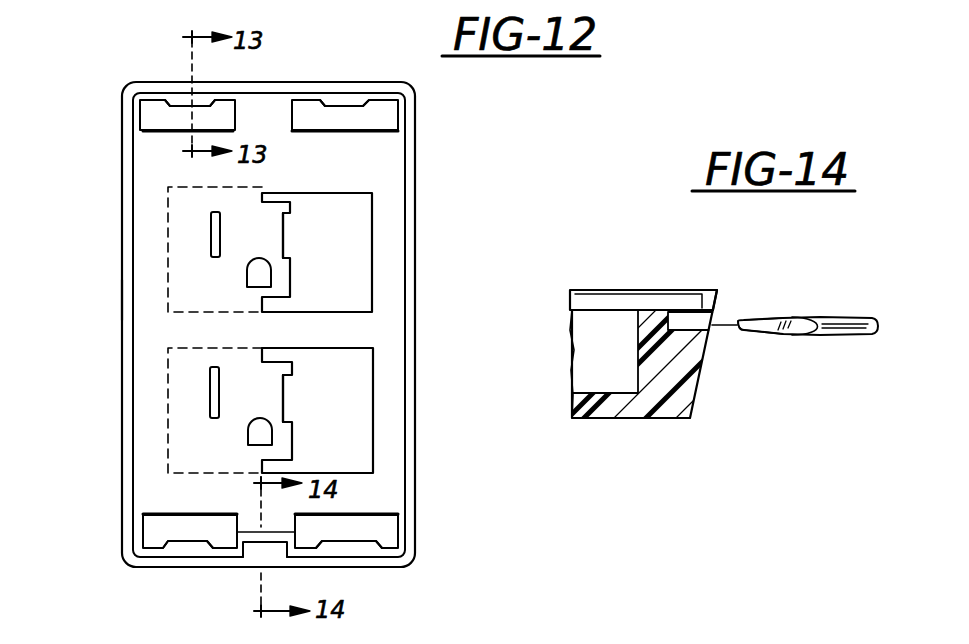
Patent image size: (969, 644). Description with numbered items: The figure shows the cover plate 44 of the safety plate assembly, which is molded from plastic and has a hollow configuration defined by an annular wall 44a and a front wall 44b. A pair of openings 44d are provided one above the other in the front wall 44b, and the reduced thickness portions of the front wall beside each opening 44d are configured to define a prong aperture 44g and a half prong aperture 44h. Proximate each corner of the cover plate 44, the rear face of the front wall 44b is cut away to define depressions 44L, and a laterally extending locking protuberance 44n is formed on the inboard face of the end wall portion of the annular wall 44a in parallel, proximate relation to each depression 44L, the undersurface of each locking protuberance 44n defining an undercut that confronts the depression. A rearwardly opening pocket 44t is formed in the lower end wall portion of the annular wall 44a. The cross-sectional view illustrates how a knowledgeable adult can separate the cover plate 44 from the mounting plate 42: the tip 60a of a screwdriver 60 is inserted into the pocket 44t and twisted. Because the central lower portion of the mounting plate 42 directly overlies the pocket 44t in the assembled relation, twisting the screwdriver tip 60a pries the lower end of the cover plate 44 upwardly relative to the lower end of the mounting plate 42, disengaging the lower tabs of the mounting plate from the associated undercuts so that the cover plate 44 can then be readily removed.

In FIG. 12, the cover plate 44 is at (111, 207).
In FIG. 14, the cover plate 44 is at (620, 430).
In FIG. 12, the annular wall 44a is at (124, 298).
In FIG. 12, the front wall 44b is at (195, 490).
In FIG. 12, the openings 44d is at (360, 241).
In FIG. 12, the prong aperture 44g is at (218, 242).
In FIG. 12, the half prong aperture 44h is at (283, 248).
In FIG. 12, the depressions 44L is at (225, 125).
In FIG. 12, the locking protuberance 44n is at (178, 97).
In FIG. 12, the pocket 44t is at (253, 568).
In FIG. 14, the pocket 44t is at (710, 328).
In FIG. 14, the mounting plate 42 is at (637, 280).
In FIG. 14, the screwdriver 60 is at (841, 350).
In FIG. 14, the screwdriver tip 60a is at (762, 318).